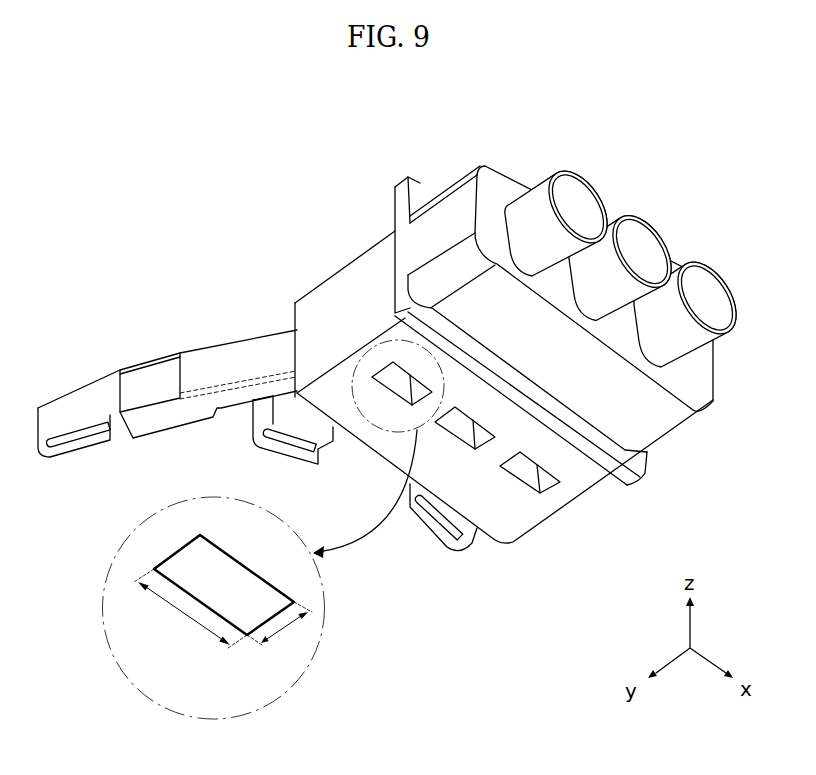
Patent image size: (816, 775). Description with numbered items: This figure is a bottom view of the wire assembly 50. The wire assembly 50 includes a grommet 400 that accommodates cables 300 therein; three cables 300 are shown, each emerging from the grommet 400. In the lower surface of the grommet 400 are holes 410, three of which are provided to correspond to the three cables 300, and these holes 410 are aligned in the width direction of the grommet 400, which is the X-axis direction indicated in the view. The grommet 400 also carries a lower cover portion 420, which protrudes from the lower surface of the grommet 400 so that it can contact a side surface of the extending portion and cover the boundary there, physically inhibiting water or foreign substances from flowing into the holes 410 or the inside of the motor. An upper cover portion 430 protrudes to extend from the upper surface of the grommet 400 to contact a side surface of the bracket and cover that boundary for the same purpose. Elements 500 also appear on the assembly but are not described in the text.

The wire assembly 50 is at (353, 190).
The cable 300 is at (703, 263).
The grommet 400 is at (460, 178).
The holes 410 is at (372, 377).
The lower cover portion 420 is at (643, 463).
The upper cover portion 430 is at (418, 186).
The clip terminals 500 is at (48, 453).